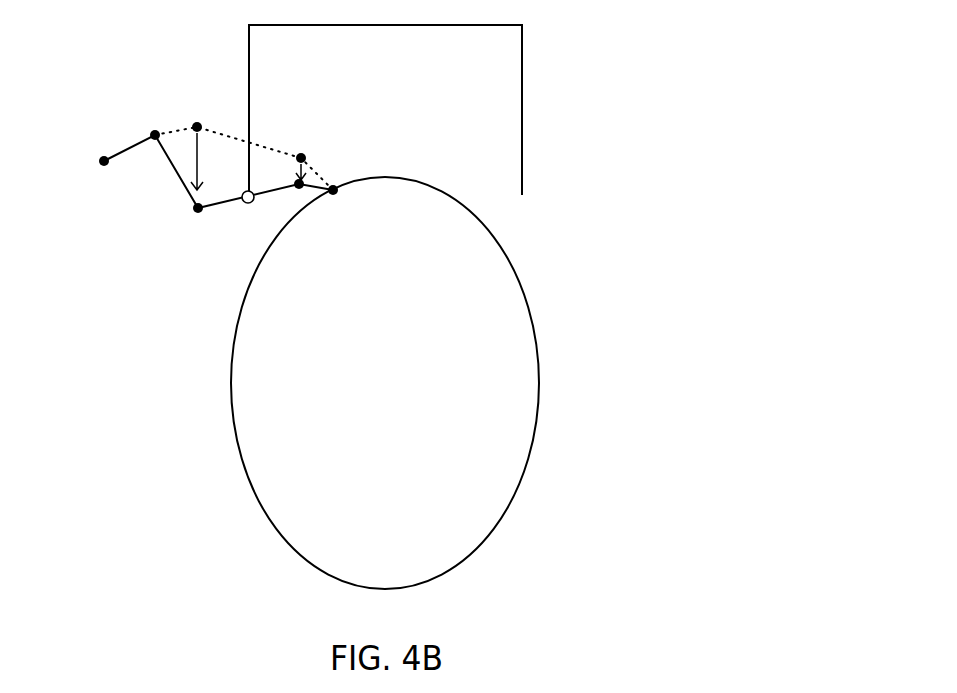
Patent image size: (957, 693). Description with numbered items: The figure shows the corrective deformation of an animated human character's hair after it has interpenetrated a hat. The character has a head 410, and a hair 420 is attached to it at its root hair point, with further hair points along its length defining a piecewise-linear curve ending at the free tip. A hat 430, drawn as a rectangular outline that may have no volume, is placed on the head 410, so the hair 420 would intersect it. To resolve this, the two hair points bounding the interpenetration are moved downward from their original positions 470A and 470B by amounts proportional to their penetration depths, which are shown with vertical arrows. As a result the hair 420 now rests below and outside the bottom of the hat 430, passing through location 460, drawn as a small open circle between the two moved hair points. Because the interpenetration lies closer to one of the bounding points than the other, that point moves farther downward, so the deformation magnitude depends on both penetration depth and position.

The head 410 is at (538, 382).
The hair 420 is at (114, 134).
The hat 430 is at (522, 85).
The location 460 is at (248, 203).
The position 470A is at (318, 144).
The position 470B is at (220, 114).